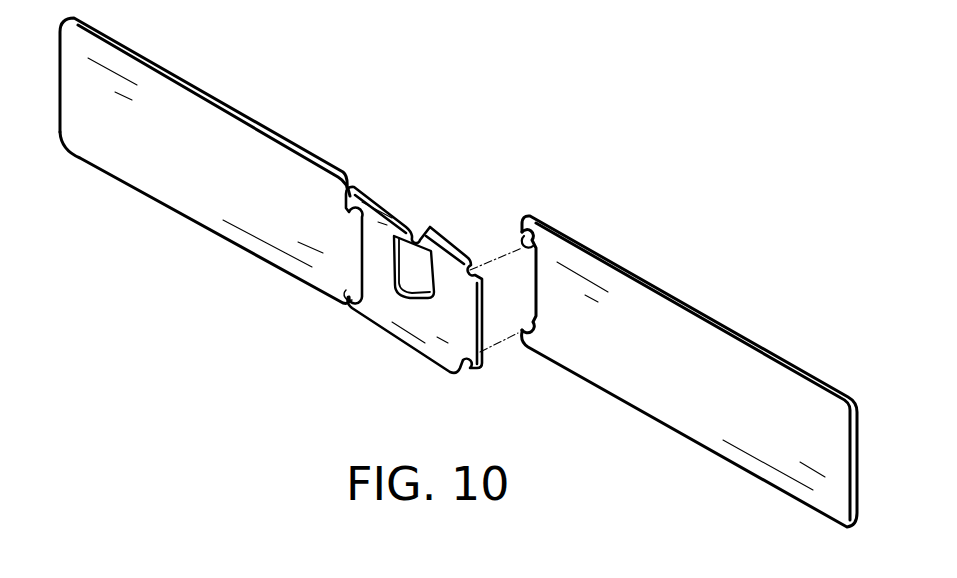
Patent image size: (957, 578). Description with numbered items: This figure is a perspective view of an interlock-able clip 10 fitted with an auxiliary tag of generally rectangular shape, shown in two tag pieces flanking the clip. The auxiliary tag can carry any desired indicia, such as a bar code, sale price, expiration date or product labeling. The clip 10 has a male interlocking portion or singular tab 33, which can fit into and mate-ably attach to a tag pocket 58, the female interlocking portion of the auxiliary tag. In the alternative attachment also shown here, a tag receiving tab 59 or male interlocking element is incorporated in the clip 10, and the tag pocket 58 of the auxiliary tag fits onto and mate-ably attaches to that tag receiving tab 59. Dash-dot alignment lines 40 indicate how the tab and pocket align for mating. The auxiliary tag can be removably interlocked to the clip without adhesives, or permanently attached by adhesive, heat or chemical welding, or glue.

The interlock-able clip 10 is at (422, 310).
The singular tab 33 is at (485, 364).
The alignment axis 40 is at (505, 340).
The tag pocket 58 is at (533, 287).
The tag receiving tab 59 is at (358, 267).